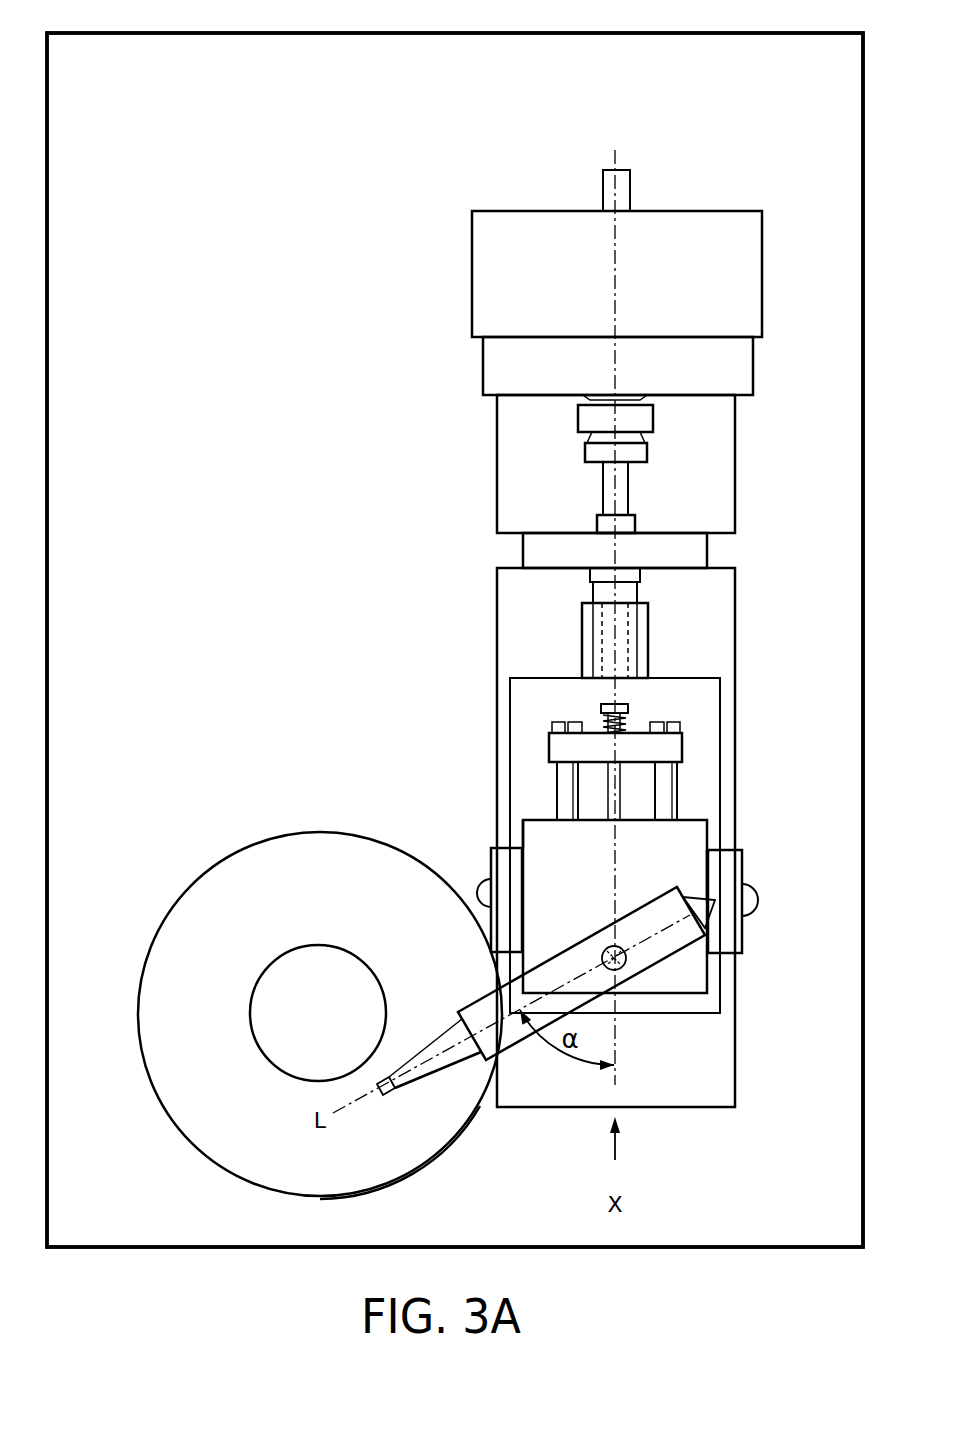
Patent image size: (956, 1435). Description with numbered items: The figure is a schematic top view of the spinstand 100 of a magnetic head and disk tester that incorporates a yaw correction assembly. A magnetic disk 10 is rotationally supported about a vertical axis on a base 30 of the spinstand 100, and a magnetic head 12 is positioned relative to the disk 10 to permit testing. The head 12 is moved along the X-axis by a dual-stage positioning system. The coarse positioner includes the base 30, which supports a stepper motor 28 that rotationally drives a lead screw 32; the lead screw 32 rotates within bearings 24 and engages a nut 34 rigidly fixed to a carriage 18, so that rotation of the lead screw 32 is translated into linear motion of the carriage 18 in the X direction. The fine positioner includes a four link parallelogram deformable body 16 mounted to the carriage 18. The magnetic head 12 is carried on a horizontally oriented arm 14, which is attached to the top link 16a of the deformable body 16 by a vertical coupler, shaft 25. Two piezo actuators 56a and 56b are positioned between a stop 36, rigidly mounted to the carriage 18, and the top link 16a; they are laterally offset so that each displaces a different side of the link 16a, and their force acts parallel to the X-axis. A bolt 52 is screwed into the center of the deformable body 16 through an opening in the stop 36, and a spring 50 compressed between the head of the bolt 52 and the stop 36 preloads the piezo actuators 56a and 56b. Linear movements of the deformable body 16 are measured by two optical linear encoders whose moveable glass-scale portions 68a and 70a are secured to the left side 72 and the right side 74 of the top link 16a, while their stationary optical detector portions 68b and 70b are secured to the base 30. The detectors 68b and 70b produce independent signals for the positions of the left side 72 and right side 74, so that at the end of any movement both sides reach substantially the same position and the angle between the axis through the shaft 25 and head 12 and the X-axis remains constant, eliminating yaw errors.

The spinstand 100 is at (136, 21).
The magnetic disk 10 is at (247, 872).
The magnetic head 12 is at (384, 1097).
The arm 14 is at (652, 960).
The deformable body 16 is at (730, 998).
The top link 16a is at (718, 840).
The carriage 18 is at (710, 803).
The bearings 24 is at (695, 555).
The shaft 25 is at (616, 972).
The stepper motor 28 is at (487, 272).
The base 30 is at (152, 1232).
The lead screw 32 is at (603, 620).
The nut 34 is at (585, 652).
The stop 36 is at (592, 748).
The spring 50 is at (600, 722).
The bolt 52 is at (603, 712).
The piezo actuator 56a is at (562, 800).
The piezo actuator 56b is at (668, 778).
The moveable portion 68a is at (497, 857).
The stationary portion 68b is at (476, 882).
The moveable portion 70a is at (728, 866).
The stationary portion 70b is at (760, 900).
The left side 72 is at (514, 832).
The right side 74 is at (650, 865).